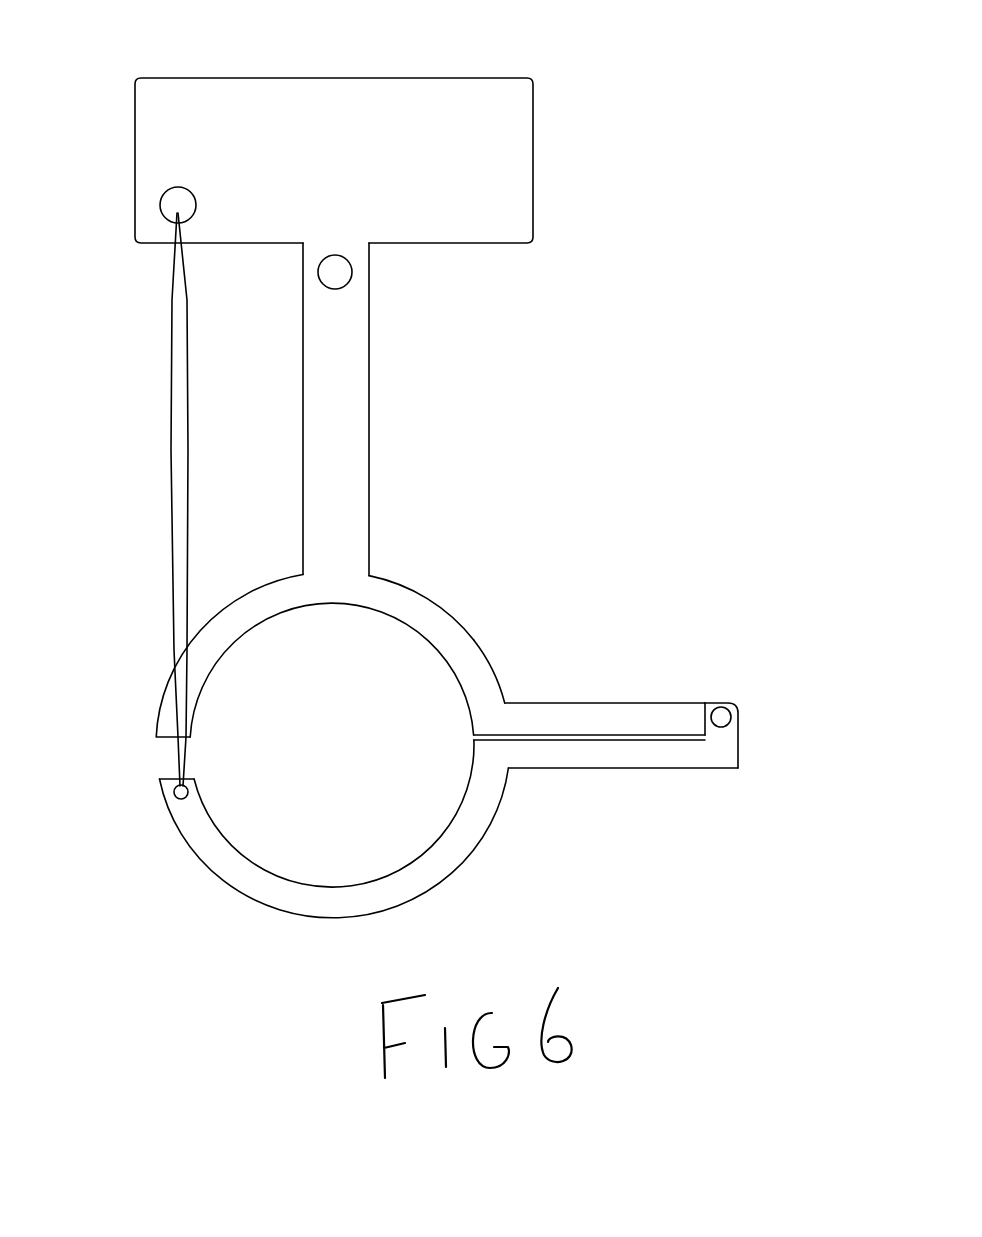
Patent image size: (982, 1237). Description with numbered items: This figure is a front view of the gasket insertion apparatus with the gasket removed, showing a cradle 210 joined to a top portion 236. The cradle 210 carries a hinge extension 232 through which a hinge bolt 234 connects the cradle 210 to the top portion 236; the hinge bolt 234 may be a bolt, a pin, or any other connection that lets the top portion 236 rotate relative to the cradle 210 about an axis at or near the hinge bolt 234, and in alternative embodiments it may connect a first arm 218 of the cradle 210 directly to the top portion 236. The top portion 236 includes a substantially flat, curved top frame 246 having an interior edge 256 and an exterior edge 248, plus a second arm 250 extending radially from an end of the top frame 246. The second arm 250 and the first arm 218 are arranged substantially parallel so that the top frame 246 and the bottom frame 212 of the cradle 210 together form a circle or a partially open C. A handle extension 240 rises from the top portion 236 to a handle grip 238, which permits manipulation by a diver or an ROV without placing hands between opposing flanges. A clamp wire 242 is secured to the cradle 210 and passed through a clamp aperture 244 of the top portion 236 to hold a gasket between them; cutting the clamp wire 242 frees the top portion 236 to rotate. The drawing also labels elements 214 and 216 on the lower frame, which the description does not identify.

The cradle 210 is at (502, 853).
The bottom frame 212 is at (333, 898).
The lower ring end portion 214 is at (240, 893).
The inner surface 216 is at (268, 872).
The first arm 218 is at (640, 755).
The hinge extension 232 is at (723, 745).
The hinge bolt 234 is at (722, 712).
The top portion 236 is at (550, 517).
The handle grip 238 is at (515, 210).
The handle extension 240 is at (357, 425).
The clamp wire 242 is at (172, 470).
The clamp aperture 244 is at (168, 207).
The top frame 246 is at (473, 643).
The exterior edge 248 is at (503, 682).
The second arm 250 is at (637, 712).
The interior edge 256 is at (412, 622).